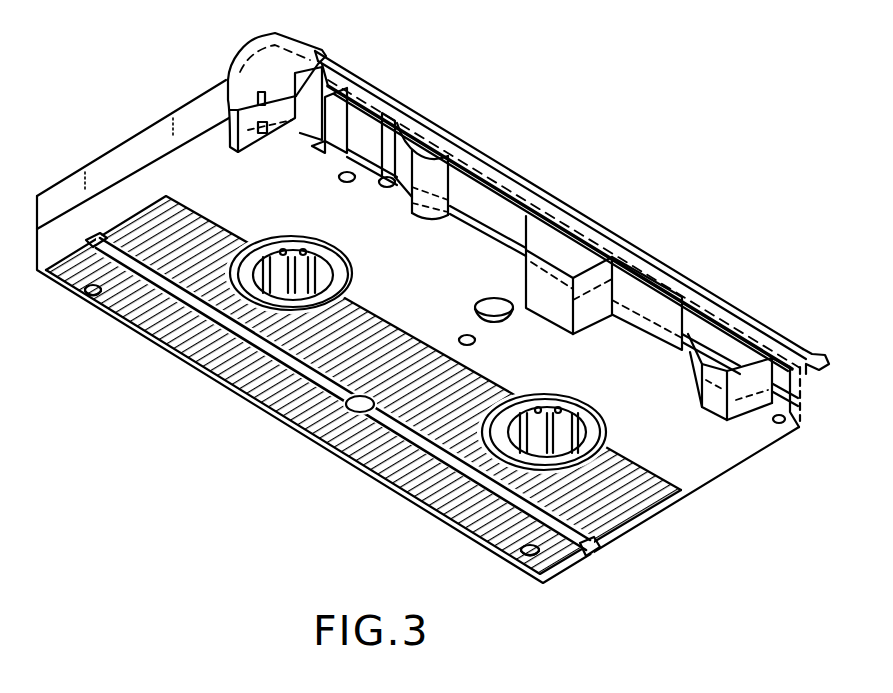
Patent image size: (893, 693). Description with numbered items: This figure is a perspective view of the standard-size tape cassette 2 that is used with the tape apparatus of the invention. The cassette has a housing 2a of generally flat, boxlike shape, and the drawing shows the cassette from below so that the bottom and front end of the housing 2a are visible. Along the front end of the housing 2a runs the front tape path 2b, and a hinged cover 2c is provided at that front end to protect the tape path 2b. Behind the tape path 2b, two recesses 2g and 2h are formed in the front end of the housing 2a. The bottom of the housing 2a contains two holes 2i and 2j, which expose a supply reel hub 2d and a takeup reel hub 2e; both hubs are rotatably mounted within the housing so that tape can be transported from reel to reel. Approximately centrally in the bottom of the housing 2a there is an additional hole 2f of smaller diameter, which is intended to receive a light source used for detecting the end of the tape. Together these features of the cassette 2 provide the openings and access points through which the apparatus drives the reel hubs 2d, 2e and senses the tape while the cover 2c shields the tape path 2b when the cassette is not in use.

The standard-size tape cassette 2 is at (475, 105).
The cassette housing 2a is at (173, 122).
The front tape path 2b is at (492, 195).
The hinged cover 2c is at (660, 257).
The supply reel hub 2d is at (583, 442).
The takeup reel hub 2e is at (303, 282).
The additional hole 2f is at (505, 321).
The recess 2g is at (740, 412).
The recess 2h is at (580, 327).
The hole 2i is at (580, 410).
The hole 2j is at (310, 250).